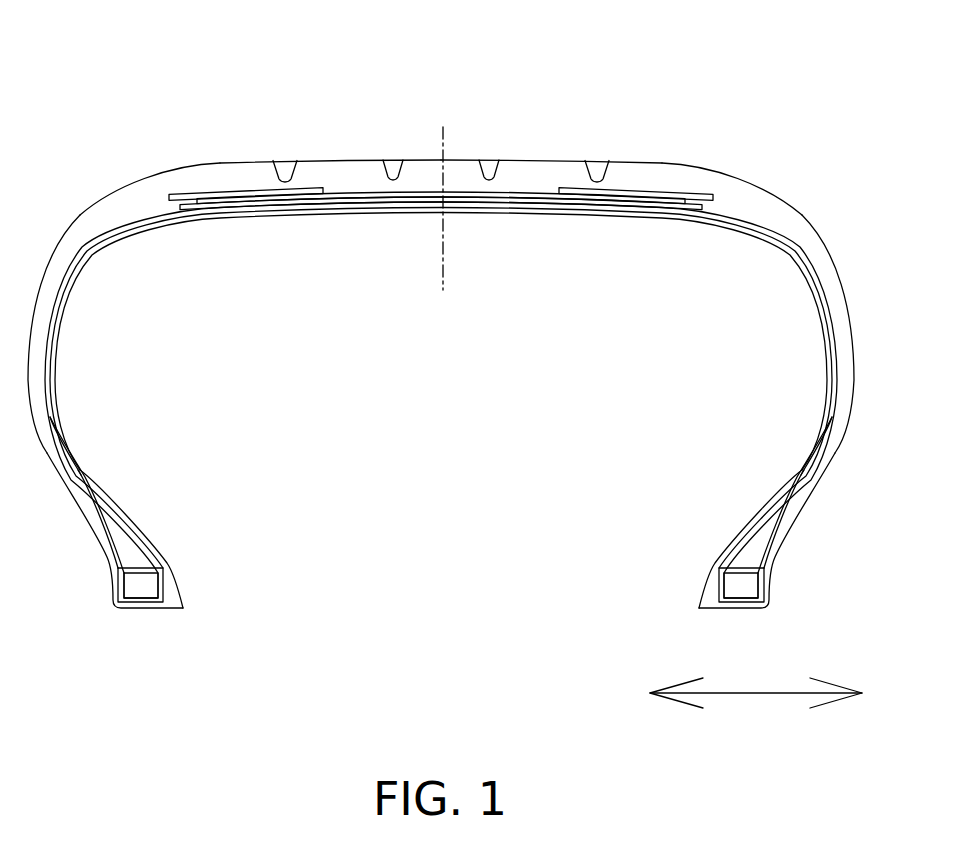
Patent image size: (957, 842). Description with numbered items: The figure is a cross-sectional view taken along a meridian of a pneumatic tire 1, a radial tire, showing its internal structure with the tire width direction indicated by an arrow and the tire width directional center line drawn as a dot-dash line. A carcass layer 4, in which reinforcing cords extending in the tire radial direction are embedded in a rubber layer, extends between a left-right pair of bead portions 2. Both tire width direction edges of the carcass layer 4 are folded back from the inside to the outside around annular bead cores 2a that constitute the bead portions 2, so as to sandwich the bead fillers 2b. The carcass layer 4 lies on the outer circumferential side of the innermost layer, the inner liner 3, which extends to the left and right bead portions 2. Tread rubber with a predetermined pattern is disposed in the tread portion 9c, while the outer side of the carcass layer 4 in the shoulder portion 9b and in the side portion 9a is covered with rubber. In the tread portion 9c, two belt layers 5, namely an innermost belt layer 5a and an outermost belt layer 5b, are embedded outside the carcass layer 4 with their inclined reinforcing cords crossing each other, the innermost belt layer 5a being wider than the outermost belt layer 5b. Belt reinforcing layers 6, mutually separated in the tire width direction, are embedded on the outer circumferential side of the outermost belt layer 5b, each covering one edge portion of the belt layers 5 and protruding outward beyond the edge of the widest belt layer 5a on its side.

The pneumatic tire 1 is at (112, 175).
The bead portions 2 is at (175, 567).
The bead cores 2a is at (727, 588).
The bead fillers 2b is at (747, 557).
The inner liner 3 is at (808, 298).
The carcass layer 4 is at (527, 203).
The belt layers 5 is at (312, 86).
The innermost belt layer 5a is at (421, 205).
The outermost belt layer 5b is at (340, 196).
The belt reinforcing layers 6 is at (246, 195).
The side portion 9a is at (850, 357).
The shoulder portion 9b is at (750, 209).
The tread portion 9c is at (548, 175).